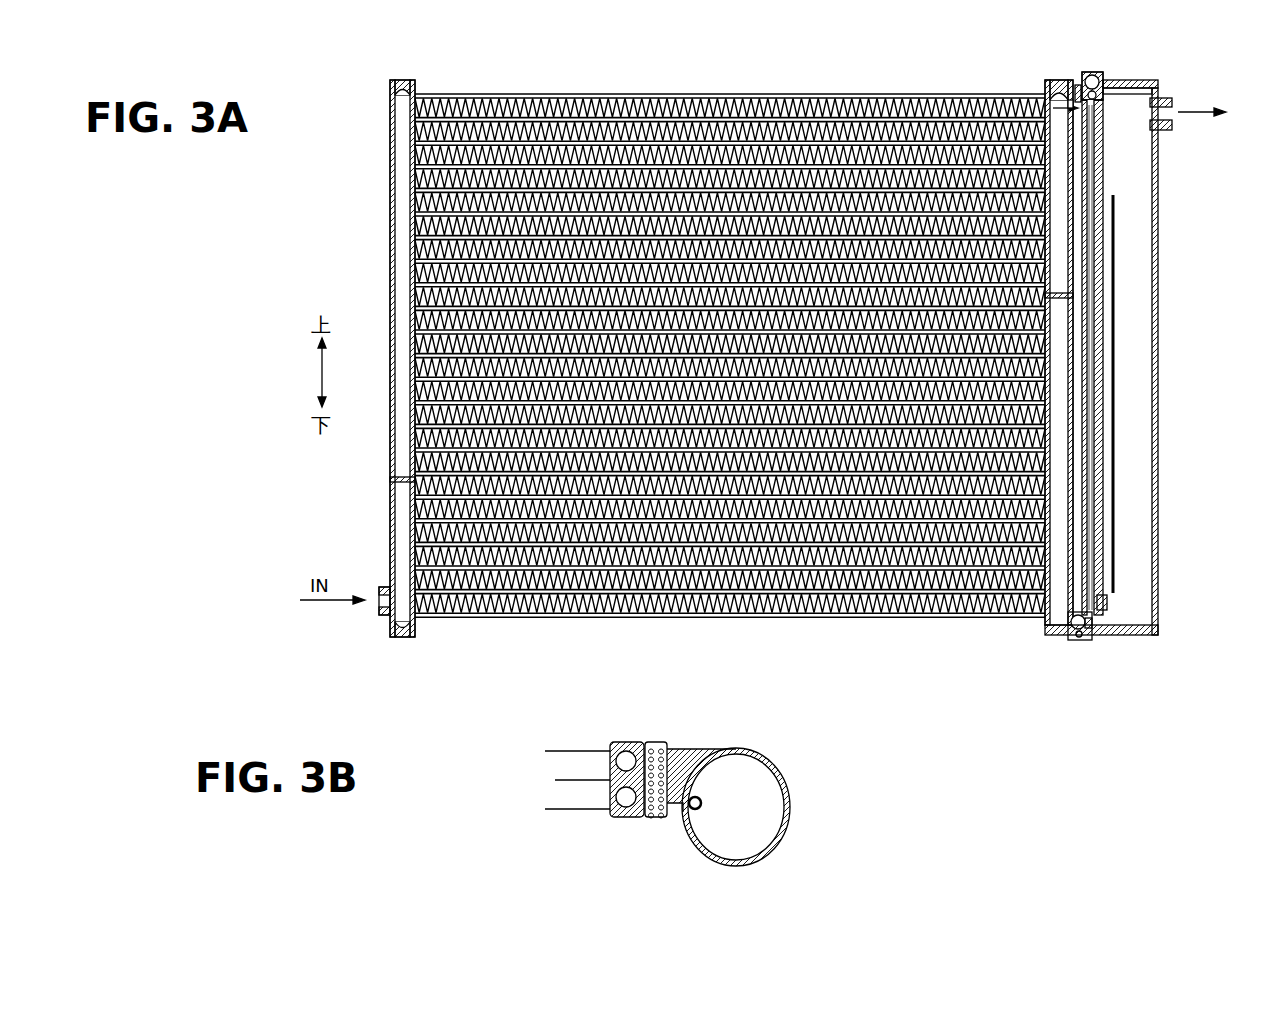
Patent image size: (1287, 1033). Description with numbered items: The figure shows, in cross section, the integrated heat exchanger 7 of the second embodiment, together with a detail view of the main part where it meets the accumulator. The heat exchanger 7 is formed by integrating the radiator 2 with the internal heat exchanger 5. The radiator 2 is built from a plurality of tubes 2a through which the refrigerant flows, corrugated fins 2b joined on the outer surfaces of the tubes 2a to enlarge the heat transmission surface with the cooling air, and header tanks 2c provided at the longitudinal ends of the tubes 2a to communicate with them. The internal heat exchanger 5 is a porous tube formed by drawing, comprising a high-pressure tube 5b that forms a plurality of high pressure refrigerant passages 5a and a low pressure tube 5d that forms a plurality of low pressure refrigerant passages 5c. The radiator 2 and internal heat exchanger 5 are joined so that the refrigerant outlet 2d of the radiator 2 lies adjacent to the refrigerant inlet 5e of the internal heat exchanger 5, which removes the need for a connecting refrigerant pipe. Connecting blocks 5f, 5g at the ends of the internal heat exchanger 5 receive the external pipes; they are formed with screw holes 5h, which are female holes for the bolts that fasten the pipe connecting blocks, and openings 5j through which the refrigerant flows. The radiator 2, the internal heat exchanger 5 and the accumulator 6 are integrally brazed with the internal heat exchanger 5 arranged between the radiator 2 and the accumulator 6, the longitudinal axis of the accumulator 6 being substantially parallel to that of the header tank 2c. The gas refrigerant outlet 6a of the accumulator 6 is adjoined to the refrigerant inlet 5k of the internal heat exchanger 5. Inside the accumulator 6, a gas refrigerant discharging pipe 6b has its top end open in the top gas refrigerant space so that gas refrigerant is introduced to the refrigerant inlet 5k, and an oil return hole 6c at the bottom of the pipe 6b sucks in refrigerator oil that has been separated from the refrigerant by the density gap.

In FIG. 3A, the radiator 2 is at (533, 565).
In FIG. 3B, the radiator 2 is at (585, 812).
In FIG. 3A, the tubes 2a is at (722, 596).
In FIG. 3A, the fins 2b is at (580, 585).
In FIG. 3A, the header tanks 2c is at (390, 147).
In FIG. 3B, the header tanks 2c is at (610, 746).
In FIG. 3A, the refrigerant outlet 2d is at (1050, 96).
In FIG. 3A, the internal heat exchanger 5 is at (1103, 445).
In FIG. 3B, the internal heat exchanger 5 is at (660, 745).
In FIG. 3A, the high pressure refrigerant passages 5a is at (1085, 477).
In FIG. 3A, the high-pressure tube 5b is at (1201, 478).
In FIG. 3A, the low pressure refrigerant passages 5c is at (1096, 530).
In FIG. 3A, the low pressure tube 5d is at (1201, 532).
In FIG. 3A, the refrigerant inlet 5e is at (1077, 88).
In FIG. 3A, the connecting block 5f is at (1098, 93).
In FIG. 3A, the connecting block 5g is at (1078, 642).
In FIG. 3A, the screw holes 5h is at (1103, 94).
In FIG. 3A, the openings 5j is at (1092, 76).
In FIG. 3A, the refrigerant inlet 5k is at (1088, 630).
In FIG. 3A, the accumulator 6 is at (1160, 345).
In FIG. 3B, the accumulator 6 is at (775, 762).
In FIG. 3A, the gas refrigerant outlet 6a is at (1110, 632).
In FIG. 3A, the gas refrigerant discharging pipe 6b is at (1115, 575).
In FIG. 3B, the gas refrigerant discharging pipe 6b is at (702, 806).
In FIG. 3A, the oil return hole 6c is at (1108, 605).
In FIG. 3A, the heat exchanger 7 is at (681, 94).